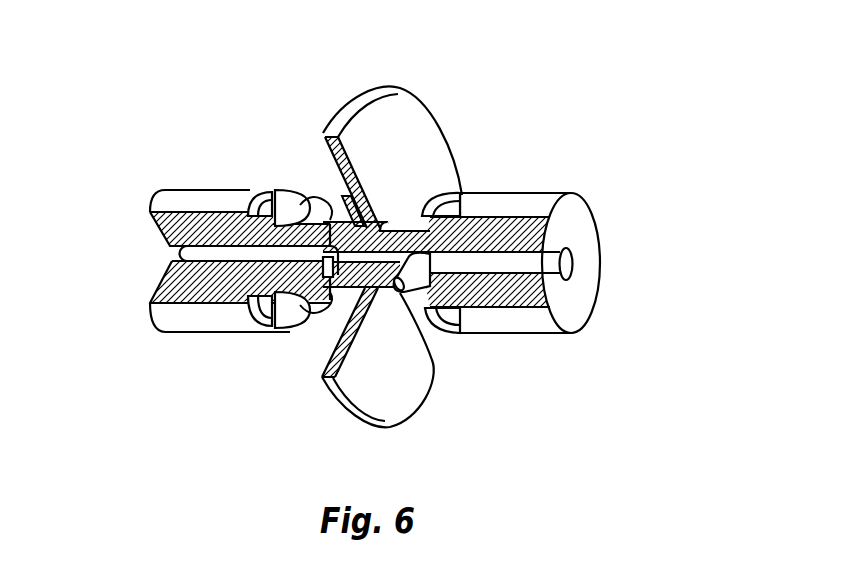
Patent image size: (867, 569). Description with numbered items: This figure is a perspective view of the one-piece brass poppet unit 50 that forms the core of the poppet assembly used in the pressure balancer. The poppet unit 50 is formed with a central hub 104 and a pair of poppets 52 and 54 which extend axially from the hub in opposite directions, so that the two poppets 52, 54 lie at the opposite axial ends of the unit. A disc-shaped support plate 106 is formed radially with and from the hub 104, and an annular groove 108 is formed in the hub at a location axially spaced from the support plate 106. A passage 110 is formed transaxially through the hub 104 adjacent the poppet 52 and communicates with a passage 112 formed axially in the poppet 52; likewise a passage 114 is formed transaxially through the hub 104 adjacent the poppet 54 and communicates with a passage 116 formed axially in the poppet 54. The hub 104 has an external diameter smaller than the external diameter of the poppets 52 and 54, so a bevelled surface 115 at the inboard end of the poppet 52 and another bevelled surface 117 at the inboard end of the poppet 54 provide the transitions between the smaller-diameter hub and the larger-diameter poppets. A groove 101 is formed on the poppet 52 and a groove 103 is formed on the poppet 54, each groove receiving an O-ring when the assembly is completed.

The poppet unit 50 is at (607, 173).
The poppet 52 is at (180, 333).
The poppet 54 is at (527, 322).
The groove 101 is at (257, 333).
The groove 103 is at (457, 333).
The central hub 104 is at (398, 180).
The support plate 106 is at (413, 112).
The annular groove 108 is at (330, 188).
The passage 110 is at (306, 332).
The passage 112 is at (187, 252).
The passage 114 is at (400, 293).
The bevelled surface 115 is at (293, 195).
The passage 116 is at (573, 258).
The bevelled surface 117 is at (443, 193).